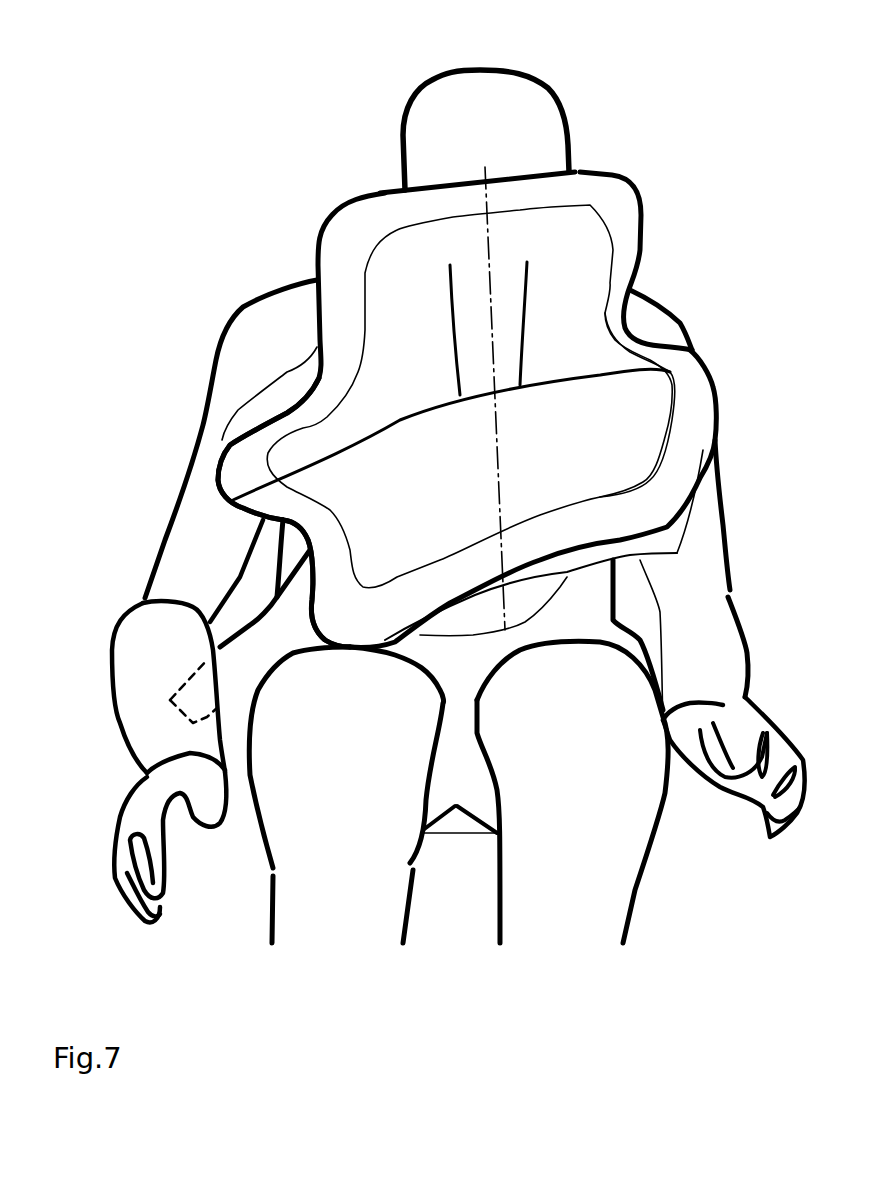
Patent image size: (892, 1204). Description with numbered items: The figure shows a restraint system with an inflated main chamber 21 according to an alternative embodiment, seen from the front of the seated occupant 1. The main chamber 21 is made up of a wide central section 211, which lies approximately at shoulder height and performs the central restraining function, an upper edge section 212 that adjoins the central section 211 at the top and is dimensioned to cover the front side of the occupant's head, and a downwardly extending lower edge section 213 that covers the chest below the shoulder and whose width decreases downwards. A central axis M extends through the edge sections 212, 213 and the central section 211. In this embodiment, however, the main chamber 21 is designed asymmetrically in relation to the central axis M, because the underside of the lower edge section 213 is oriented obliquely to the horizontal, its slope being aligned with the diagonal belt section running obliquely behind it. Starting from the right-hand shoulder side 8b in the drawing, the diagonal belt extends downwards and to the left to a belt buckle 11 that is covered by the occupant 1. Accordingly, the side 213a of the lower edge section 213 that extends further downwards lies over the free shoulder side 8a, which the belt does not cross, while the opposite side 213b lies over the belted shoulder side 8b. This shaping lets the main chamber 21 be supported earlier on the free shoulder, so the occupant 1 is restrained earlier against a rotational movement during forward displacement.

The occupant 1 is at (387, 68).
The main chamber 21 is at (434, 433).
The central section 211 is at (337, 440).
The upper edge section 212 is at (423, 298).
The lower edge section 213 is at (473, 497).
The side of the lower edge section 213a is at (345, 597).
The side of the lower edge section 213b is at (637, 510).
The side of the shoulder 8a is at (277, 327).
The side of the shoulder 8b is at (633, 303).
The belt buckle 11 is at (187, 707).
The central axis M is at (487, 197).